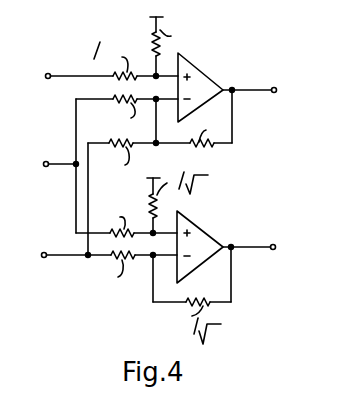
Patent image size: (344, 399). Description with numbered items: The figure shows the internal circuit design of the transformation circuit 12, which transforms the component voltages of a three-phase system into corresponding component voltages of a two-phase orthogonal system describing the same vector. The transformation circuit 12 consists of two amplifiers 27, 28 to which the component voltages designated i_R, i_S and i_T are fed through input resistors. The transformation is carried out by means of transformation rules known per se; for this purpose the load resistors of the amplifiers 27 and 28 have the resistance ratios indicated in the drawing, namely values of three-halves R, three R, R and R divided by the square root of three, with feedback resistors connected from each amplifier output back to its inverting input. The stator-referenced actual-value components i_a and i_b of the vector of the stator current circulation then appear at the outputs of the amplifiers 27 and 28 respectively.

The transformation circuit 12 is at (160, 181).
The amplifier 27 is at (200, 71).
The amplifier 28 is at (199, 230).